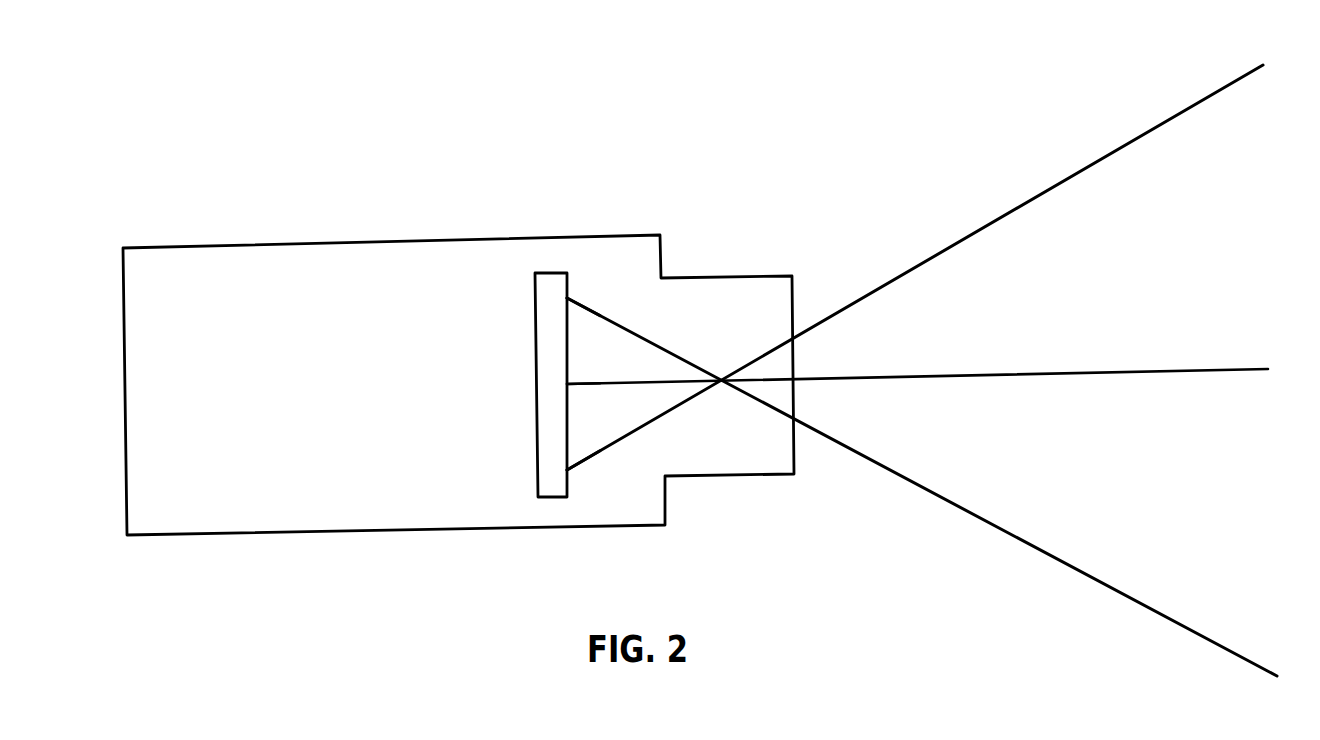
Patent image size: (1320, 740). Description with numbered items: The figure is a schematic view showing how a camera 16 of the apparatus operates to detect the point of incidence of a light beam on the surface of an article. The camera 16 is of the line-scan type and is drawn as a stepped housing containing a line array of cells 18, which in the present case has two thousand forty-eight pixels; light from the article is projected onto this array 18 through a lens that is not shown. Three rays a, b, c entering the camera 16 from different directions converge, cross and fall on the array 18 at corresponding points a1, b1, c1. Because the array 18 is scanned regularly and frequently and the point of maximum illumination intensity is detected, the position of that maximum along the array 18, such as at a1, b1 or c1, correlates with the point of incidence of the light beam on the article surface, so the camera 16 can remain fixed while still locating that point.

The camera 16 is at (310, 515).
The line array of cells 18 is at (550, 365).
The light ray a is at (915, 253).
The light ray b is at (917, 361).
The light ray c is at (922, 487).
The image point a1 is at (585, 470).
The image point b1 is at (585, 370).
The image point c1 is at (584, 296).